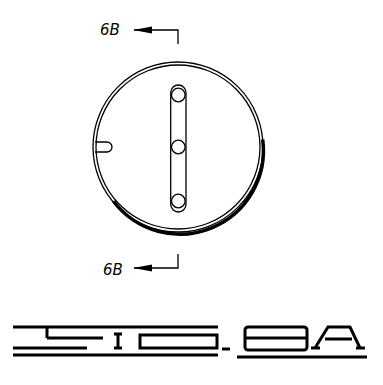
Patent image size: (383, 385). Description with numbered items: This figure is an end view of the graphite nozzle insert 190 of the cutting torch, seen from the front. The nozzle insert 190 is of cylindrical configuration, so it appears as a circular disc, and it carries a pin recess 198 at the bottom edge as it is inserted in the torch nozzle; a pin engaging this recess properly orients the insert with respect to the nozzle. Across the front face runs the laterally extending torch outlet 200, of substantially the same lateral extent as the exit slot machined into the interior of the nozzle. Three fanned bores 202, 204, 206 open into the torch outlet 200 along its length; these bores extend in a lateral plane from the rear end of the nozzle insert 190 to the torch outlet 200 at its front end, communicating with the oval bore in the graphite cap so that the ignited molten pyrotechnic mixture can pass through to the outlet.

The nozzle insert 190 is at (208, 97).
The pin recess 198 is at (105, 150).
The torch outlet 200 is at (180, 165).
The fanned bore 202 is at (183, 89).
The fanned bore 204 is at (185, 146).
The fanned bore 206 is at (186, 200).